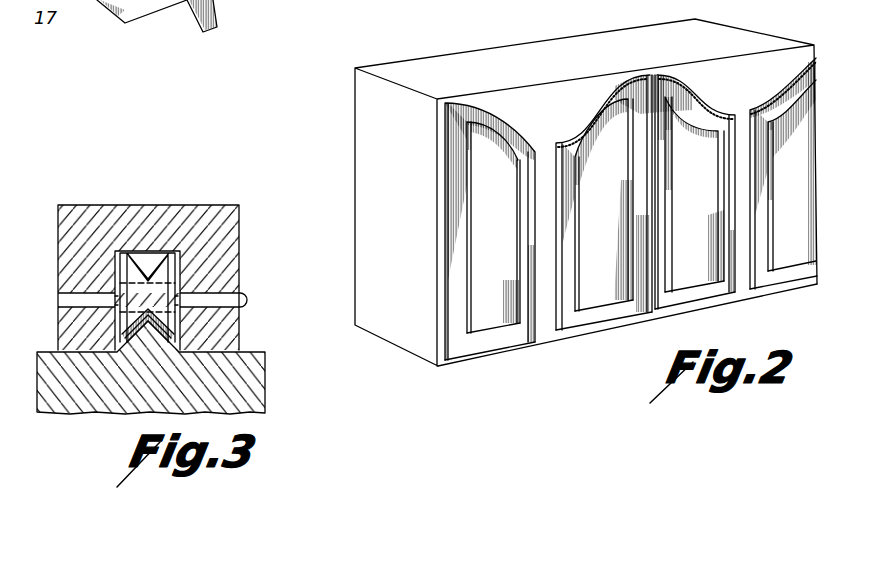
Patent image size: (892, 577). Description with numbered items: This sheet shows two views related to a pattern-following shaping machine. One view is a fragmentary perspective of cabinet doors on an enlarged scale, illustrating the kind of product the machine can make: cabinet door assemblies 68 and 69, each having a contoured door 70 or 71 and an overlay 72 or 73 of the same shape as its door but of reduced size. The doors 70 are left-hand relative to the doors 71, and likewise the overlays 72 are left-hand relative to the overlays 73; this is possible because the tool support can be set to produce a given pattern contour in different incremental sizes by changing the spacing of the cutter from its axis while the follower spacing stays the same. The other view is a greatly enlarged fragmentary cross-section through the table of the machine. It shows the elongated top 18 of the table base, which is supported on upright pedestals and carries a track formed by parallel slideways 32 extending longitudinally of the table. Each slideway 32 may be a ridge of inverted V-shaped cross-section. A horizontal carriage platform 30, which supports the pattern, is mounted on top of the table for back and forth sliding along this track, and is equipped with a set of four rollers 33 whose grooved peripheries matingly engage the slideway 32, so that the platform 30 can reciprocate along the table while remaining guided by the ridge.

In FIG. 3, the elongated top 18 is at (252, 378).
In FIG. 3, the carriage platform 30 is at (235, 268).
In FIG. 3, the slideway 32 is at (168, 333).
In FIG. 3, the roller 33 is at (182, 255).
In FIG. 2, the cabinet door assembly 68 is at (473, 360).
In FIG. 2, the cabinet door assembly 69 is at (590, 339).
In FIG. 2, the contoured door 70 is at (449, 224).
In FIG. 2, the contoured door 71 is at (598, 110).
In FIG. 2, the overlay 72 is at (485, 250).
In FIG. 2, the overlay 73 is at (592, 203).